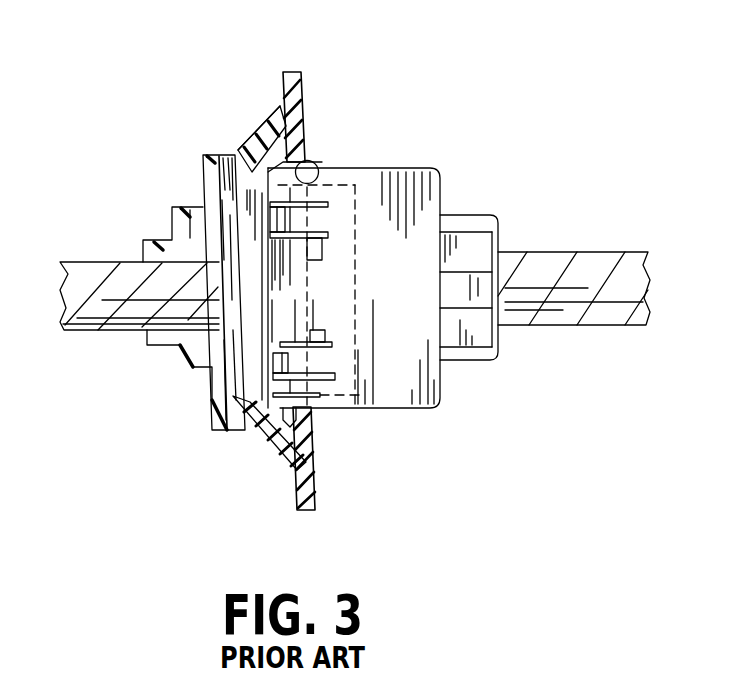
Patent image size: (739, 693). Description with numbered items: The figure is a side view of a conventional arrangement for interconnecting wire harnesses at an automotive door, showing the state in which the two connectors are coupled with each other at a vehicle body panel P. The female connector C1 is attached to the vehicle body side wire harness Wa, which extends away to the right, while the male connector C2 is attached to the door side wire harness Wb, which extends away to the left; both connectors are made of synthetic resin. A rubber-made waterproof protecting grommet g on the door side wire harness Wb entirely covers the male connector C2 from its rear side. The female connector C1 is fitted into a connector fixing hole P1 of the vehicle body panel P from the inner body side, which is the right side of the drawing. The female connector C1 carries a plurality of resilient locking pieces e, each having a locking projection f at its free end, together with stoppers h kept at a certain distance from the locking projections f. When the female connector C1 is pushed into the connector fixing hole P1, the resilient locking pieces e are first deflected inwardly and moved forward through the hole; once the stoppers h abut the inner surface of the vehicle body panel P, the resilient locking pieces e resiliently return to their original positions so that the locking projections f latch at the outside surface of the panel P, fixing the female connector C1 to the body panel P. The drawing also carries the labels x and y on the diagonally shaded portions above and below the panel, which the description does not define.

The vehicle body panel P is at (303, 86).
The connector fixing hole P1 is at (314, 176).
The female connector C1 is at (420, 168).
The male connector C2 is at (232, 346).
The vehicle body side wire harness Wa is at (583, 260).
The door side wire harness Wb is at (84, 272).
The grommet g is at (213, 150).
The upper gap x is at (281, 114).
The lower gap y is at (290, 470).
The resilient locking pieces e is at (303, 360).
The locking projection f is at (278, 365).
The stoppers h is at (325, 407).